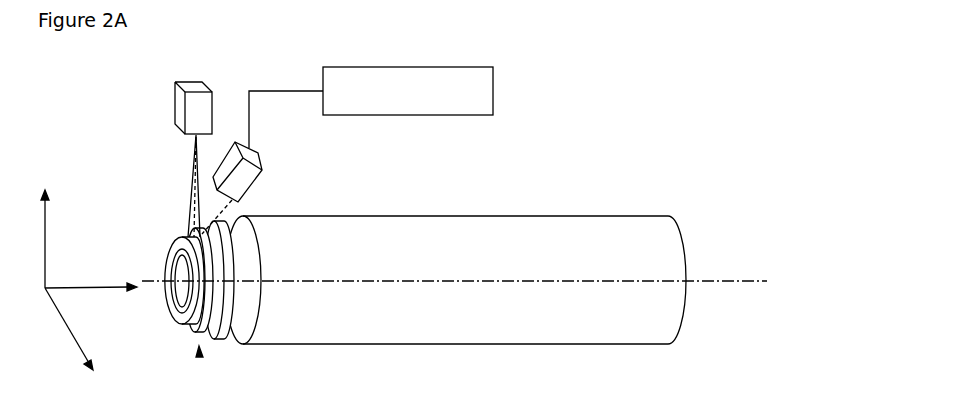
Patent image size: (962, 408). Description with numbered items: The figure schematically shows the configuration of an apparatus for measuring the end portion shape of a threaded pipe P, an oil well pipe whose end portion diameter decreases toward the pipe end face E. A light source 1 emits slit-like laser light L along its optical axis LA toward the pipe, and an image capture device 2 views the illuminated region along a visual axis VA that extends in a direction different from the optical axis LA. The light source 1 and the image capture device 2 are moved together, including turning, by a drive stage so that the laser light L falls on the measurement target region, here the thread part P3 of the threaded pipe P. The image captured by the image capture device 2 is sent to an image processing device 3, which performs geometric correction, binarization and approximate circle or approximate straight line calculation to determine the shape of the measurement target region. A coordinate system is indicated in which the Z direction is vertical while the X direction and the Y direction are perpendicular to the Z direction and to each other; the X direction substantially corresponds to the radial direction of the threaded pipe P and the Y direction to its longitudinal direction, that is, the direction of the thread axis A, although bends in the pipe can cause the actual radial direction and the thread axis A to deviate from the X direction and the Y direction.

The light source 1 is at (191, 86).
The image capture device 2 is at (253, 178).
The image processing device 3 is at (371, 107).
The laser light L is at (192, 174).
The optical axis LA is at (191, 203).
The pipe end face E is at (171, 245).
The visual axis VA is at (249, 222).
The threaded pipe P is at (441, 215).
The thread axis A is at (702, 278).
The thread part P3 is at (201, 355).
The X direction X is at (74, 339).
The Y direction Y is at (91, 278).
The Z direction Z is at (44, 228).